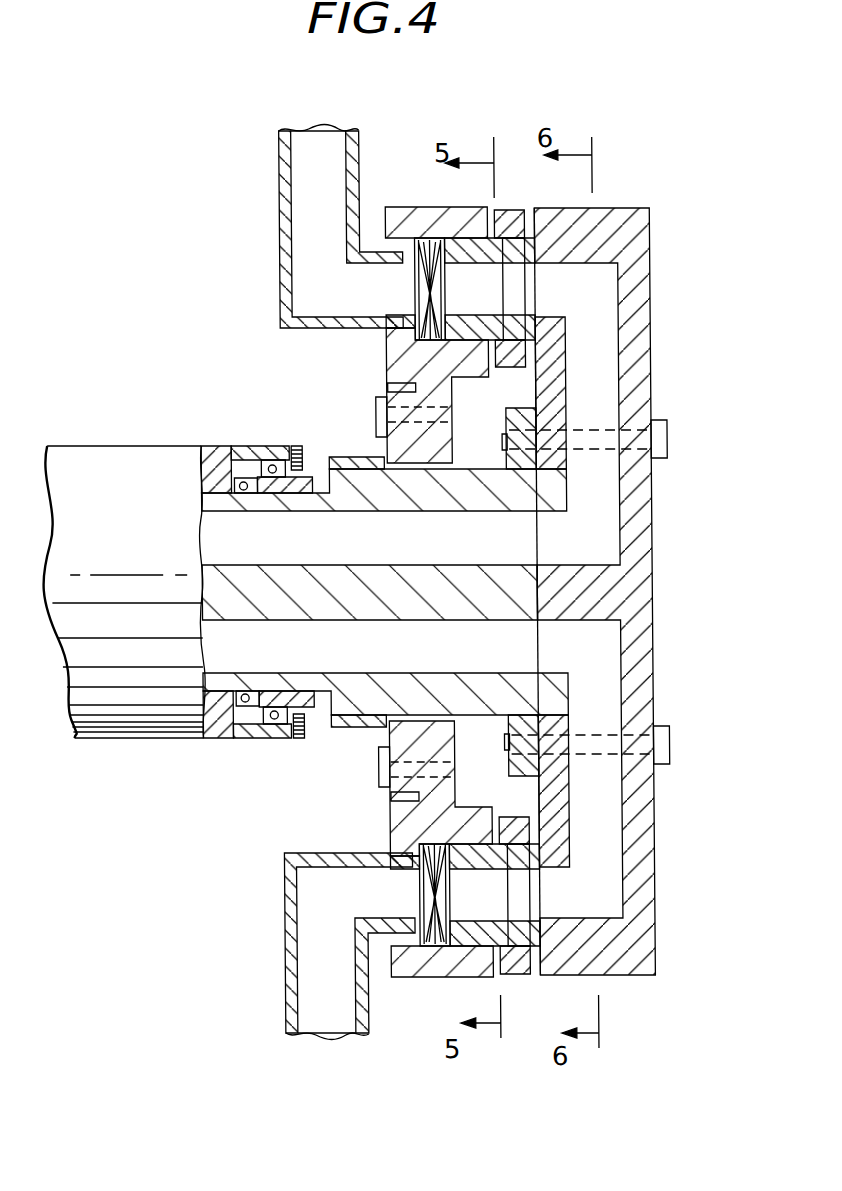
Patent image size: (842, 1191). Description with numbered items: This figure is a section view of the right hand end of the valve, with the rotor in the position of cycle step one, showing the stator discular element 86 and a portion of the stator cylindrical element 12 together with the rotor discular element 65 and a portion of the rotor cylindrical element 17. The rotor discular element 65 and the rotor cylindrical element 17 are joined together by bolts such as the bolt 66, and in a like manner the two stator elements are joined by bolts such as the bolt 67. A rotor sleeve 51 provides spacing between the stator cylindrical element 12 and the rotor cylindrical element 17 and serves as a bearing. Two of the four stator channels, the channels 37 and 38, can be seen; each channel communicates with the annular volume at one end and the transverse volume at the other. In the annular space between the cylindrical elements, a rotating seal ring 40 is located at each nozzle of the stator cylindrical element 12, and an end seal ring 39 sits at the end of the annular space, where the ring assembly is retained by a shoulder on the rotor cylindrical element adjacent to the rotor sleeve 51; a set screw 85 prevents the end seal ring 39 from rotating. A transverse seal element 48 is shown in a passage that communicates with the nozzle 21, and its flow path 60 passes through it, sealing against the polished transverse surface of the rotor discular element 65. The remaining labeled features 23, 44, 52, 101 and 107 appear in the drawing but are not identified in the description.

The stator cylindrical element 12 is at (107, 446).
The rotor cylindrical element 17 is at (476, 469).
The nozzle 21 is at (282, 166).
The lower housing 23 is at (285, 942).
The channel 37 is at (604, 308).
The channel 38 is at (602, 902).
The end seal ring 39 is at (297, 718).
The rotating seal ring 40 is at (245, 462).
The bearing 44 is at (222, 718).
The transverse seal element 48 is at (505, 210).
The rotor sleeve 51 is at (353, 718).
The O-ring 52 is at (272, 468).
The flow path 60 is at (493, 301).
The rotor discular element 65 is at (610, 208).
The bolt 66 is at (660, 426).
The bolt 67 is at (386, 386).
The set screw 85 is at (299, 447).
The stator discular element 86 is at (430, 207).
The housing portion 101 is at (317, 109).
The housing portion 107 is at (327, 1053).